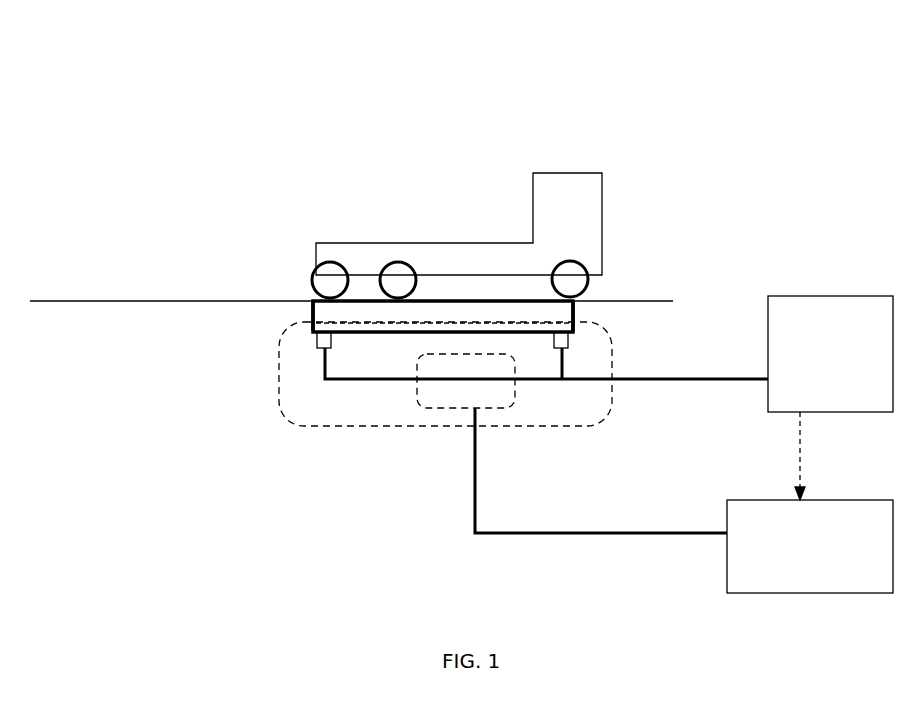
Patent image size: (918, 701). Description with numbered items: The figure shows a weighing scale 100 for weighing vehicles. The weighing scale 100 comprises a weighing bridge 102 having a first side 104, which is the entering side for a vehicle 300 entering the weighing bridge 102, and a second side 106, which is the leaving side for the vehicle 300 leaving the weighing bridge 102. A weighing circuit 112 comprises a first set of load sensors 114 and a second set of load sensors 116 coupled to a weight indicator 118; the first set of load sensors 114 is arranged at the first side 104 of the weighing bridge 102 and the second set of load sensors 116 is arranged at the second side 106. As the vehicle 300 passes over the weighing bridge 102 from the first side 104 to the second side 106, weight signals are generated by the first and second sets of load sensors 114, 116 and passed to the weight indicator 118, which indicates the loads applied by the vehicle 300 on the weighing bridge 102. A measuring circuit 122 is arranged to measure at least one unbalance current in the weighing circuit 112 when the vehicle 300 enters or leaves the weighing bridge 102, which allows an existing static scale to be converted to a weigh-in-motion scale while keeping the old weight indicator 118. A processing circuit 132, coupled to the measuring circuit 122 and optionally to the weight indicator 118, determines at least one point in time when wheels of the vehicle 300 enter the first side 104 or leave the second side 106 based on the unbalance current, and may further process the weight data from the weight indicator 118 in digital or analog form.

The weighing scale 100 is at (309, 130).
The vehicle 300 is at (553, 188).
The weighing bridge 102 is at (445, 310).
The first side 104 is at (313, 312).
The second side 106 is at (582, 307).
The first set of load sensors 114 is at (316, 341).
The second set of load sensors 116 is at (568, 345).
The weighing circuit 112 is at (282, 407).
The measuring circuit 122 is at (415, 407).
The weight indicator 118 is at (830, 354).
The processing circuit 132 is at (810, 546).